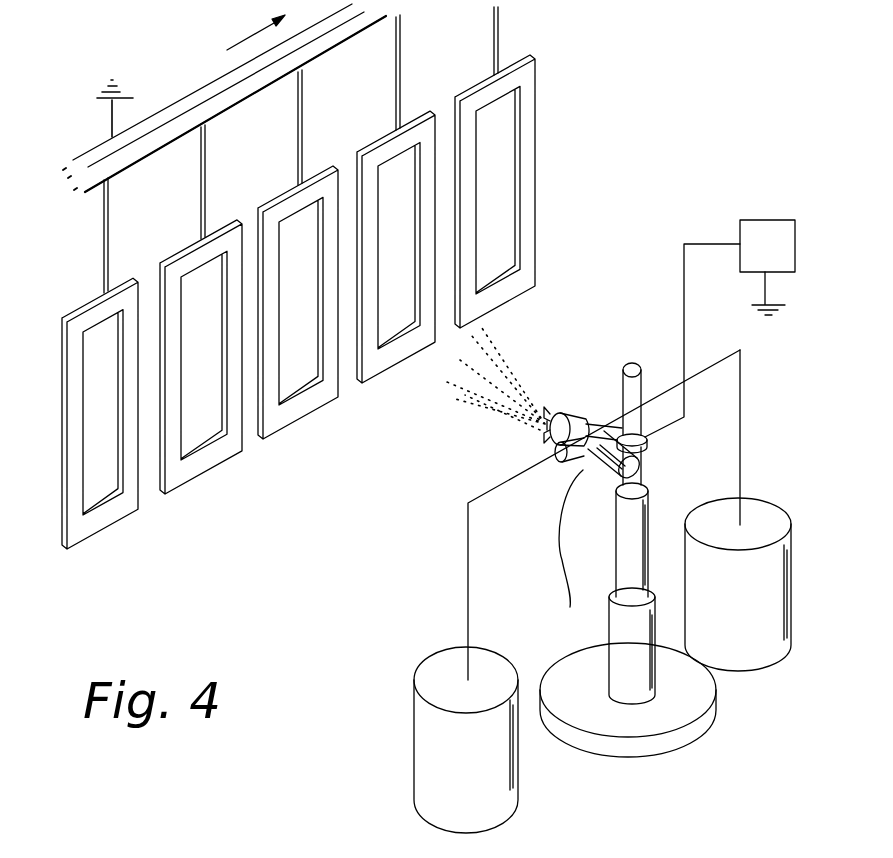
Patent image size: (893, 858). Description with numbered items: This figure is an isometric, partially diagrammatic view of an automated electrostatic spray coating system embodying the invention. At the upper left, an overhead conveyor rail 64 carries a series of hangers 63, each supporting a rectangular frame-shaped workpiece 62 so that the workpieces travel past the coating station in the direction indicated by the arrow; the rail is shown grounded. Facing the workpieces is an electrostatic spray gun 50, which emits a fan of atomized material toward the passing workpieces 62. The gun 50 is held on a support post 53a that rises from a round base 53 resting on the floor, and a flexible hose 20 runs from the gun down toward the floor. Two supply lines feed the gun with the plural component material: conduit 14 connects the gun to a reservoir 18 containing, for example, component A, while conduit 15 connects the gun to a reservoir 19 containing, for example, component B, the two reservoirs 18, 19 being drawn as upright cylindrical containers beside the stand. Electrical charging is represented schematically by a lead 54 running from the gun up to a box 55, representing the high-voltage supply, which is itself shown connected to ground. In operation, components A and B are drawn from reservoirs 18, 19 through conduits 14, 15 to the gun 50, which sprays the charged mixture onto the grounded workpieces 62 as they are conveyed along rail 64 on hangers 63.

The conveyor rail 64 is at (208, 84).
The hanger 63 is at (298, 138).
The workpiece frame 62 is at (376, 140).
The spray gun 50 is at (572, 385).
The ground lead 54 is at (684, 298).
The power supply 55 is at (784, 259).
The conduit 14 is at (740, 392).
The conduit 15 is at (468, 550).
The hose 20 is at (562, 551).
The reservoir 18 is at (747, 611).
The reservoir 19 is at (478, 763).
The base 53 is at (713, 727).
The support post 53a is at (648, 503).